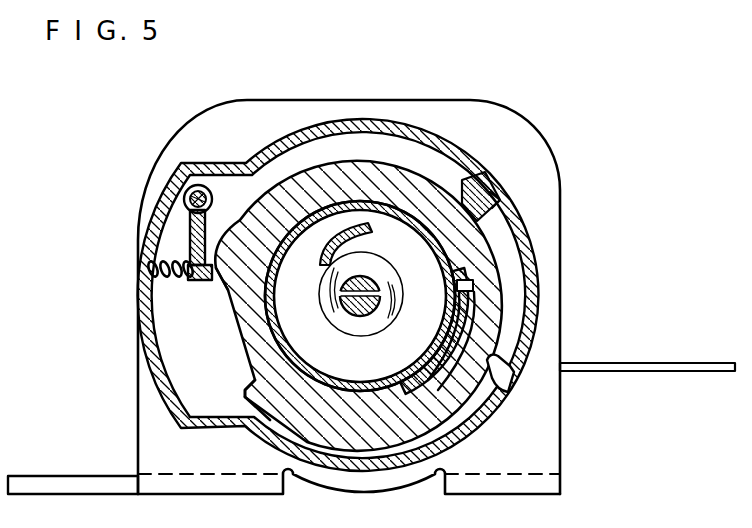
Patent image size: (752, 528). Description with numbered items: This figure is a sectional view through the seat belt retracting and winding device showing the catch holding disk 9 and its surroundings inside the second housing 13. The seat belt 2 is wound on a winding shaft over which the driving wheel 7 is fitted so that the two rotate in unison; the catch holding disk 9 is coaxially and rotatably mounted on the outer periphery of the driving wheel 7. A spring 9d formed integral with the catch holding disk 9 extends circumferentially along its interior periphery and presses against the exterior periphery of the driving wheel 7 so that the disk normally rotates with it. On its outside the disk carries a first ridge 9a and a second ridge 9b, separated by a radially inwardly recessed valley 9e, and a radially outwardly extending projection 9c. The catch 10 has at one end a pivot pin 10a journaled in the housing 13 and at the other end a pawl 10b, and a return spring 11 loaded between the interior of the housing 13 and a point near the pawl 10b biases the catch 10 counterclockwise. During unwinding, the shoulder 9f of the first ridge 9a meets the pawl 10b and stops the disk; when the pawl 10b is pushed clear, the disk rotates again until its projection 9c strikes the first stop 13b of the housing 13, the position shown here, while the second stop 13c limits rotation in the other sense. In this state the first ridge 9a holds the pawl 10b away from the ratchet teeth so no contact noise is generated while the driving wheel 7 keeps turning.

The seat belt 2 is at (650, 371).
The driving wheel 7 is at (407, 213).
The catch holding disk 9 is at (403, 172).
The first ridge 9a is at (220, 252).
The second ridge 9b is at (252, 398).
The projection 9c is at (498, 198).
The spring 9d is at (470, 296).
The valley 9e is at (250, 366).
The shoulder 9f is at (230, 307).
The catch 10 is at (196, 238).
The pivot pin 10a is at (187, 195).
The pawl 10b is at (226, 286).
The return spring 11 is at (160, 281).
The second housing 13 is at (330, 118).
The first stop 13b is at (478, 188).
The second stop 13c is at (508, 380).